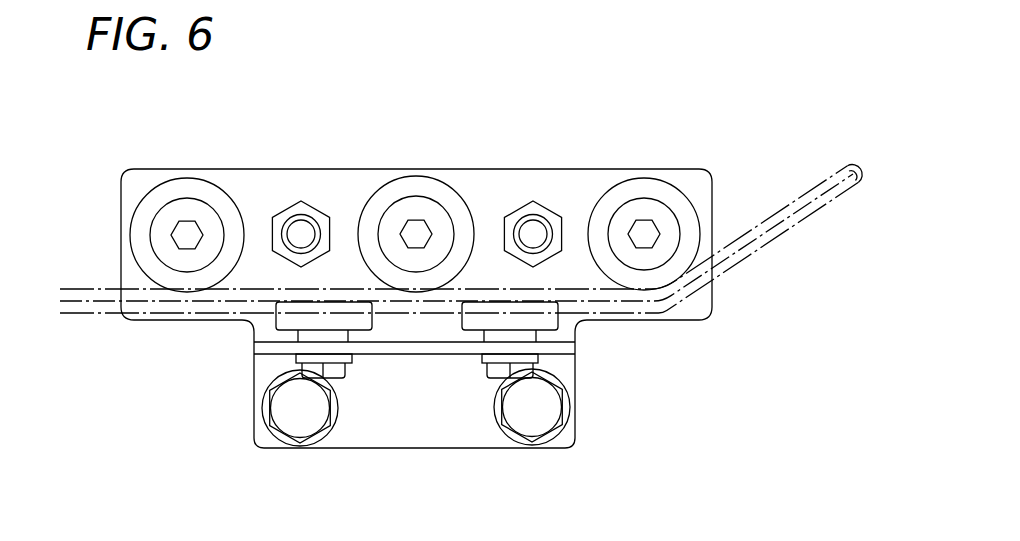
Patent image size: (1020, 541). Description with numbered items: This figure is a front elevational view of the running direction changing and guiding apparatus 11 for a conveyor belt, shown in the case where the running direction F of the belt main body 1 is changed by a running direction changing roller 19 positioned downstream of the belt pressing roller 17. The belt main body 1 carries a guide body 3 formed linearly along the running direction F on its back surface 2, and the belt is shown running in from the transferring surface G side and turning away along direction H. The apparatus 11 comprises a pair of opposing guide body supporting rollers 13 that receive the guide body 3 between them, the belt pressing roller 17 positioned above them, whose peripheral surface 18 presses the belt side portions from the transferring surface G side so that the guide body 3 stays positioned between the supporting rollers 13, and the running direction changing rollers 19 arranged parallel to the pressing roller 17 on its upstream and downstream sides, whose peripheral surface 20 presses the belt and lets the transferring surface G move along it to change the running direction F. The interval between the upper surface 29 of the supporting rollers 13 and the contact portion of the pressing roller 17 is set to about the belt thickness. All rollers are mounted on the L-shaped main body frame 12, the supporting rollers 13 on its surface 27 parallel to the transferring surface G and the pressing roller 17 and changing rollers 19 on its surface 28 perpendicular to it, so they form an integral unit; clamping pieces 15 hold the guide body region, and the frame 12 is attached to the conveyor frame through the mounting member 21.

The belt main body 1 is at (832, 178).
The back surface 2 is at (862, 170).
The guide body 3 is at (102, 307).
The running direction changing and guiding apparatus 11 is at (378, 154).
The main body frame 12 is at (570, 168).
The guide body supporting roller 13 is at (275, 328).
The clamping piece 15 is at (290, 322).
The belt pressing roller 17 is at (443, 192).
The peripheral surface 18 is at (423, 180).
The running direction changing roller 19 is at (198, 192).
The peripheral surface 20 is at (165, 185).
The mounting member 21 is at (477, 433).
The surface 27 is at (383, 337).
The surface 28 is at (263, 185).
The upper surface 29 is at (349, 302).
The running direction F is at (93, 242).
The transferring surface G is at (83, 282).
The pipe bend direction H is at (687, 299).